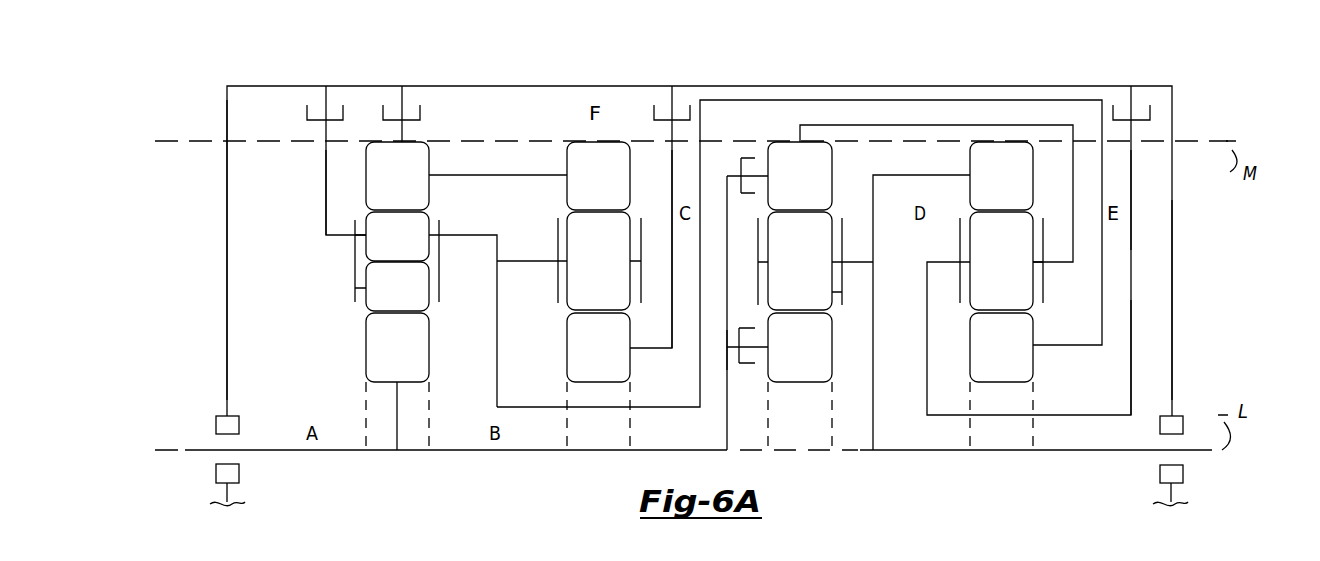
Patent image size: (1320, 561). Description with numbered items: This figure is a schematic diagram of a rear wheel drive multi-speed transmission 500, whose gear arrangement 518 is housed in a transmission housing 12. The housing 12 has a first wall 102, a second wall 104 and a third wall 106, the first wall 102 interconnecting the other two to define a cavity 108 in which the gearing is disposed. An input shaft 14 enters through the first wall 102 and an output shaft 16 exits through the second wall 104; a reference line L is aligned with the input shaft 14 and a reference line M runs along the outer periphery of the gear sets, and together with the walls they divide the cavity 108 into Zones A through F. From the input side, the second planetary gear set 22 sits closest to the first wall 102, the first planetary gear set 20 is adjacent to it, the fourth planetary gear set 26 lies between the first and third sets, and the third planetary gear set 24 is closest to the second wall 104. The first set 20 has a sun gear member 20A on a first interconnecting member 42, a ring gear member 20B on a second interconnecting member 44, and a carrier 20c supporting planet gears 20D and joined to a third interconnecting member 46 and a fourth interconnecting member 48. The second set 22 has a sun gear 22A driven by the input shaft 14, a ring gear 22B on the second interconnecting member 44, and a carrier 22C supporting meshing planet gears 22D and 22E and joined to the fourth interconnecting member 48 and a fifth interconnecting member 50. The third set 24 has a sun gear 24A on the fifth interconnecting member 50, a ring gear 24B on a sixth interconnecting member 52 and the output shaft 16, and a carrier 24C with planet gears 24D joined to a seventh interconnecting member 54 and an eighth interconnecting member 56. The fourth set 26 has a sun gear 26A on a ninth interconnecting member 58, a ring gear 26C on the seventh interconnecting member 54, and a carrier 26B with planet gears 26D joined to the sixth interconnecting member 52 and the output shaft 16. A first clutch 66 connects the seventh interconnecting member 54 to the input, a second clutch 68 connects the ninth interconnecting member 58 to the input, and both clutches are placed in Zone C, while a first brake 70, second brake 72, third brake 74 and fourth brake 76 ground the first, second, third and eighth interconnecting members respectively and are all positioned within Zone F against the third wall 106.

The transmission 500 is at (1192, 78).
The transmission housing 12 is at (1172, 240).
The input shaft or member 14 is at (205, 448).
The output shaft or member 16 is at (1130, 452).
The first planetary gear set 20 is at (597, 455).
The sun gear member 20A is at (588, 361).
The ring gear member 20B is at (588, 190).
The planet gear carrier member 20c is at (558, 283).
The planet gears 20D is at (588, 274).
The second planetary gear set 22 is at (394, 455).
The sun gear member 22A is at (387, 361).
The ring gear member 22B is at (387, 190).
The planet carrier member 22C is at (440, 226).
The planet gears 22D is at (387, 250).
The planet gears 22E is at (387, 300).
The third planetary gear set 24 is at (1005, 455).
The sun gear member 24A is at (991, 361).
The ring gear member 24B is at (991, 190).
The planet carrier member 24C is at (1043, 230).
The planet gears 24D is at (991, 274).
The fourth planetary gear set 26 is at (805, 455).
The sun gear member 26A is at (790, 361).
The planet carrier member 26B is at (843, 292).
The ring gear member 26C is at (790, 190).
The planet gears 26D is at (790, 274).
The first shaft or interconnecting member 42 is at (672, 198).
The second shaft or interconnecting member 44 is at (472, 175).
The third shaft or interconnecting member 46 is at (326, 192).
The fourth shaft or interconnecting member 48 is at (516, 261).
The fifth shaft or interconnecting member 50 is at (745, 100).
The sixth shaft or interconnecting member 52 is at (860, 262).
The seventh shaft or interconnecting member 54 is at (870, 125).
The eighth shaft or interconnecting member 56 is at (1133, 186).
The ninth shaft or interconnecting member 58 is at (763, 348).
The first clutch 66 is at (741, 163).
The second clutch 68 is at (755, 328).
The first brake 70 is at (654, 112).
The second brake 72 is at (420, 112).
The third brake 74 is at (343, 112).
The fourth brake 76 is at (1150, 112).
The first wall or structural member 102 is at (227, 243).
The second wall or structural member 104 is at (1172, 325).
The third wall or structural member 106 is at (547, 86).
The space or cavity 108 is at (1147, 378).
The gear arrangement 518 is at (1140, 300).